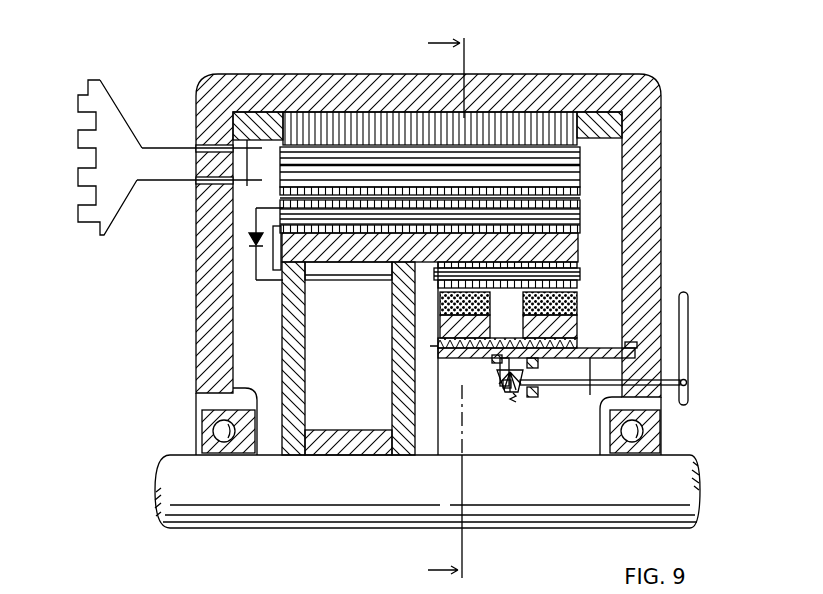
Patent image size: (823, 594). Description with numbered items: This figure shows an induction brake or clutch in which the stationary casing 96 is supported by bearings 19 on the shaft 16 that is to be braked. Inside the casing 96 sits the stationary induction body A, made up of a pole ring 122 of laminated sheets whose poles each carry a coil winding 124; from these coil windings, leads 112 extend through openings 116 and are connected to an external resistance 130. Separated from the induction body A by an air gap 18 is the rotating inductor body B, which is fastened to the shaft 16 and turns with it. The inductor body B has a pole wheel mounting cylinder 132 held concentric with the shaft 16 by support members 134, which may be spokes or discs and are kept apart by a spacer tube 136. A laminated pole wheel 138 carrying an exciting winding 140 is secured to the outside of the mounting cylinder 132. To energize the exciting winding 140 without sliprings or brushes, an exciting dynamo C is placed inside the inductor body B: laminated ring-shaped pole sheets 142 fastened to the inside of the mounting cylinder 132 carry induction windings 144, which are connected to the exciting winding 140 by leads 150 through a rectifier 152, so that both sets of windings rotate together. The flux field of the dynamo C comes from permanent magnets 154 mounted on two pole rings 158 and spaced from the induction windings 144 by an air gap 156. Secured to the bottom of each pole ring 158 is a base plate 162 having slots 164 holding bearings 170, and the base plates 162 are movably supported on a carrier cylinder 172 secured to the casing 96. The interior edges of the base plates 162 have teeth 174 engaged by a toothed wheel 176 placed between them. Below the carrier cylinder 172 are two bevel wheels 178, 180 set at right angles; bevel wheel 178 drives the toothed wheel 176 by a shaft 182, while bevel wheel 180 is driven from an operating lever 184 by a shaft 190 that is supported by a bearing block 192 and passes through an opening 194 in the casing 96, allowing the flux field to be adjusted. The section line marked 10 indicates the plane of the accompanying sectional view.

The shaft 16 is at (198, 512).
The air gap 18 is at (583, 193).
The bearings 19 is at (218, 431).
The stationary casing 96 is at (397, 82).
The leads 112 is at (258, 150).
The openings 116 is at (215, 183).
The pole ring 122 is at (330, 114).
The coil winding 124 is at (515, 150).
The resistance 130 is at (80, 93).
The pole wheel mounting cylinder 132 is at (583, 240).
The support members 134 is at (287, 357).
The spacer tube 136 is at (329, 437).
The pole wheel 138 is at (290, 238).
The exciting winding 140 is at (582, 217).
The pole sheets 142 is at (583, 262).
The induction windings 144 is at (583, 283).
The leads 150 is at (322, 282).
The rectifier 152 is at (262, 247).
The permanent magnets 154 is at (438, 306).
The air gap 156 is at (738, 322).
The pole rings 158 is at (438, 330).
The base plate 162 is at (556, 346).
The slots 164 is at (436, 348).
The bearings 170 is at (438, 348).
The carrier cylinder 172 is at (640, 352).
The teeth 174 is at (505, 386).
The toothed wheel 176 is at (493, 352).
The bevel wheel 178 is at (536, 386).
The bevel wheel 180 is at (513, 395).
The shaft 182 is at (540, 364).
The operating lever 184 is at (689, 378).
The shaft 190 is at (592, 393).
The bearing block 192 is at (520, 392).
The opening 194 is at (662, 396).
The section line 10 is at (462, 301).
The induction body A is at (270, 185).
The inductor body B is at (587, 232).
The exciting dynamo C is at (600, 316).